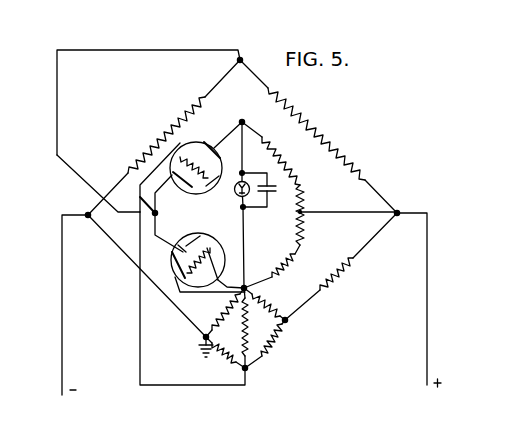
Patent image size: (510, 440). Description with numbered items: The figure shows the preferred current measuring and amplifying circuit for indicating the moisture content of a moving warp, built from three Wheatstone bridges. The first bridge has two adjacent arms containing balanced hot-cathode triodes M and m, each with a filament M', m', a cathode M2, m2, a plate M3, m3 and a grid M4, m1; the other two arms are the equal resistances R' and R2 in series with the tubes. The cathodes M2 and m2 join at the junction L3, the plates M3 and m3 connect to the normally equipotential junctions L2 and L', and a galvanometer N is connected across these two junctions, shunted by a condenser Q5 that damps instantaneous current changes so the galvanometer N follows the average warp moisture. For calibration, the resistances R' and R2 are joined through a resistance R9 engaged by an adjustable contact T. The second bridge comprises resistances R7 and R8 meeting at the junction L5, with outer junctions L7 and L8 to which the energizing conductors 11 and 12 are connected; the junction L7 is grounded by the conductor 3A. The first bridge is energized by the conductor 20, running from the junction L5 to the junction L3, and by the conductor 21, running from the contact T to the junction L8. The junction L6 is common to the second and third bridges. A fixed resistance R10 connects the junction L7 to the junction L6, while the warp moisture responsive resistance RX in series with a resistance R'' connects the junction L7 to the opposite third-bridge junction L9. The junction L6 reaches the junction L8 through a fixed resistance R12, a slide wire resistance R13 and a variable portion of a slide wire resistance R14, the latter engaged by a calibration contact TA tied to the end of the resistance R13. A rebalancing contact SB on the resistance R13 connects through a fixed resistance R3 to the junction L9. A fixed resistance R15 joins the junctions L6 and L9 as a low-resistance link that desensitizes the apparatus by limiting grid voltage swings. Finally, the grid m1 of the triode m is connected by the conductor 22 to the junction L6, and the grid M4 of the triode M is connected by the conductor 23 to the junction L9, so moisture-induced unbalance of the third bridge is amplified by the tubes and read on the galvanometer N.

The conductor 20 is at (57, 83).
The energizing conductor 11 is at (62, 297).
The energizing conductor 12 is at (428, 313).
The conductor 21 is at (336, 212).
The conductor 22 is at (145, 327).
The conductor 23 is at (180, 291).
The conductor 3A is at (203, 341).
The bridge junction L5 is at (240, 60).
The bridge junction L' is at (247, 112).
The bridge junction L7 is at (88, 217).
The bridge junction L8 is at (399, 215).
The bridge junction L6 is at (247, 370).
The bridge junction L3 is at (142, 206).
The bridge junction L2 is at (246, 286).
The bridge junction L9 is at (246, 292).
The resistance R7 is at (173, 128).
The resistance R8 is at (314, 128).
The resistance R2 is at (262, 143).
The resistance R9 is at (303, 203).
The adjustable contact T is at (304, 213).
The resistance R' is at (286, 266).
The galvanometer N is at (246, 176).
The condenser Q5 is at (277, 190).
The fixed resistance R12 is at (348, 272).
The contact SB is at (290, 320).
The fixed resistance R3 is at (284, 316).
The slide wire resistance R13 is at (292, 324).
The adjustable contact TA is at (272, 356).
The slide wire resistance R14 is at (262, 362).
The fixed resistance R15 is at (244, 370).
The fixed resistance R10 is at (222, 357).
The warp moisture responsive resistance RX is at (213, 328).
The resistance R'' is at (196, 307).
The triode tube element m is at (206, 158).
The plate m3 is at (216, 126).
The cathode m2 is at (194, 200).
The grid m1 is at (220, 198).
The filament m' is at (172, 201).
The triode tube element M is at (180, 254).
The filament M' is at (190, 228).
The cathode M2 is at (214, 225).
The grid M4 is at (208, 248).
The plate M3 is at (172, 257).